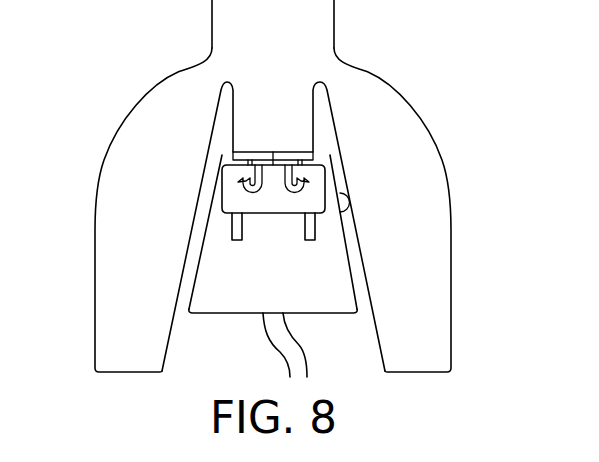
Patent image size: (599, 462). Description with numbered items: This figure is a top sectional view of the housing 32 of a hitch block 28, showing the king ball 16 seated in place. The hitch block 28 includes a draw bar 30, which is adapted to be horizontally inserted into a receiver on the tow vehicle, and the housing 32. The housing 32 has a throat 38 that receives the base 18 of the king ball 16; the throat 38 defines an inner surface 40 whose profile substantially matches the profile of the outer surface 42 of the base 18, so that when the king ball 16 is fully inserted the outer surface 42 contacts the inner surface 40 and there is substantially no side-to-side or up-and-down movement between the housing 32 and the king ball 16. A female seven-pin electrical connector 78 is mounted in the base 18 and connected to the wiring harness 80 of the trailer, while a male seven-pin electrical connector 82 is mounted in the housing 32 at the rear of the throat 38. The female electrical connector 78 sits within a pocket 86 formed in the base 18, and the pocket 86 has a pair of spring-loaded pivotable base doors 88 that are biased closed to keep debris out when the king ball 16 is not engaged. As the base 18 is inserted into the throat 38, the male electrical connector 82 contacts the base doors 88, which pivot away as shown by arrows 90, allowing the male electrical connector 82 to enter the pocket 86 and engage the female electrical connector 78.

The king ball 16 is at (328, 314).
The base 18 is at (320, 268).
The hitch block 28 is at (94, 290).
The draw bar 30 is at (328, 29).
The housing 32 is at (425, 267).
The throat 38 is at (221, 344).
The inner surface 40 is at (350, 213).
The outer surface 42 is at (346, 296).
The female 7-pin electrical connector 78 is at (272, 227).
The wiring harness 80 is at (278, 353).
The male 7-pin electrical connector 82 is at (300, 117).
The pocket 86 is at (270, 206).
The base doors 88 is at (298, 152).
The arrows 90 is at (232, 187).